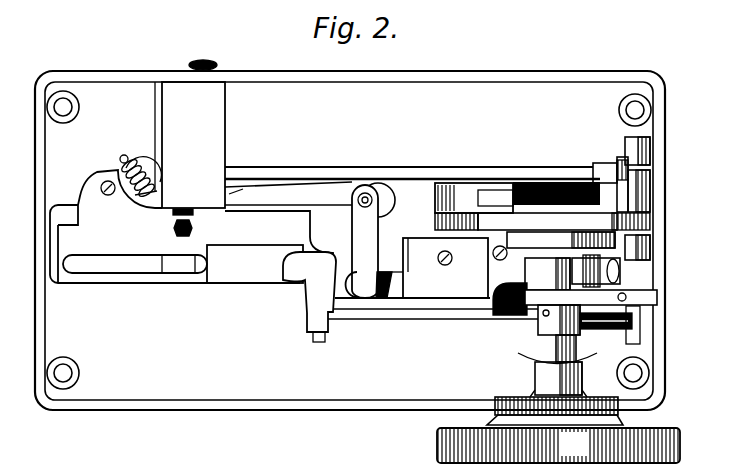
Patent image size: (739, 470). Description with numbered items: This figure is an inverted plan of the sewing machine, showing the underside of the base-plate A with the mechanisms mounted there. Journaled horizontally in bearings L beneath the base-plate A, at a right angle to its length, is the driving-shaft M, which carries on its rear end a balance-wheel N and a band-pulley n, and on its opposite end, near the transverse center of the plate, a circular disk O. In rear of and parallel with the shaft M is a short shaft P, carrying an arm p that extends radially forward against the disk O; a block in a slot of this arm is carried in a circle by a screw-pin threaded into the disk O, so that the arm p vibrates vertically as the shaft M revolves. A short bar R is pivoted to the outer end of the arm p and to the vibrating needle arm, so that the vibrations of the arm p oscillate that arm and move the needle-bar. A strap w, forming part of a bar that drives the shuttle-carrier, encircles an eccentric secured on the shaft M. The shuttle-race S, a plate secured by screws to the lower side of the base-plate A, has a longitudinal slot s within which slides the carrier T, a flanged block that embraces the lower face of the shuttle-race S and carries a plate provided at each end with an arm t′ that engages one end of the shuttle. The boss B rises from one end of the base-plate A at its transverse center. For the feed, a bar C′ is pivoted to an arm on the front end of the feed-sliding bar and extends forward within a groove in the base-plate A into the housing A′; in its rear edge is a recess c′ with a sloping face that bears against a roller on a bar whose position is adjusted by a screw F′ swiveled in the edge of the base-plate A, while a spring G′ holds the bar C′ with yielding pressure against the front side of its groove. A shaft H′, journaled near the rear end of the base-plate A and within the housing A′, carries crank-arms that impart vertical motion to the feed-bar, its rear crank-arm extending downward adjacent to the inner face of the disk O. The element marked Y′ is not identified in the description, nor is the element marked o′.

The base-plate A is at (359, 229).
The housing A′ is at (190, 159).
The screw F′ is at (205, 55).
The spring G′ is at (141, 170).
The shaft H′ is at (354, 174).
The bar C′ is at (288, 193).
The recess c′ is at (235, 191).
The shuttle-race S is at (192, 226).
The slot s is at (135, 265).
The carrier T is at (255, 264).
The boss B is at (412, 268).
The arm t′ is at (309, 312).
The rod Y′ is at (438, 321).
The bar R is at (450, 198).
The arm p is at (564, 222).
The disk O is at (561, 240).
The screw o′ is at (540, 252).
The bearing L is at (556, 327).
The short shaft P is at (642, 196).
The strap w is at (575, 299).
The shaft M is at (548, 343).
The band-pulley n is at (624, 426).
The balance-wheel N is at (558, 445).